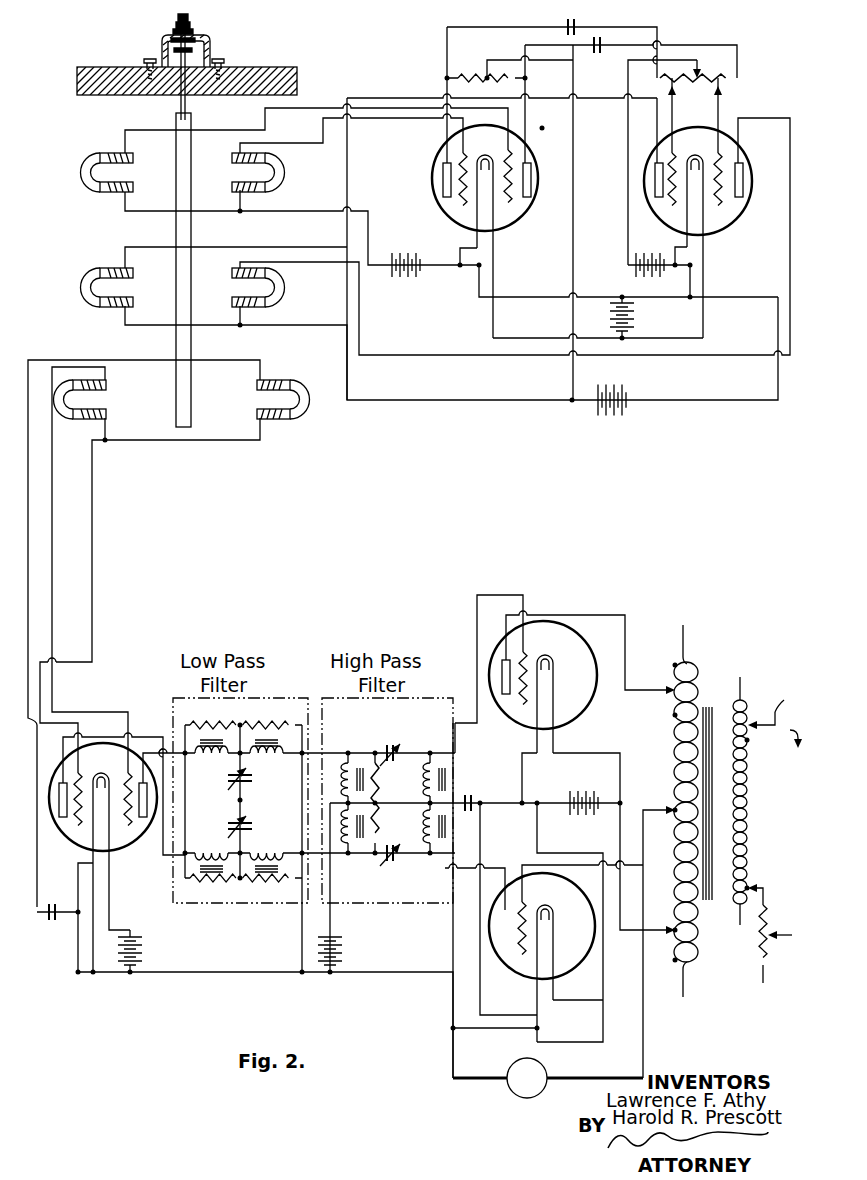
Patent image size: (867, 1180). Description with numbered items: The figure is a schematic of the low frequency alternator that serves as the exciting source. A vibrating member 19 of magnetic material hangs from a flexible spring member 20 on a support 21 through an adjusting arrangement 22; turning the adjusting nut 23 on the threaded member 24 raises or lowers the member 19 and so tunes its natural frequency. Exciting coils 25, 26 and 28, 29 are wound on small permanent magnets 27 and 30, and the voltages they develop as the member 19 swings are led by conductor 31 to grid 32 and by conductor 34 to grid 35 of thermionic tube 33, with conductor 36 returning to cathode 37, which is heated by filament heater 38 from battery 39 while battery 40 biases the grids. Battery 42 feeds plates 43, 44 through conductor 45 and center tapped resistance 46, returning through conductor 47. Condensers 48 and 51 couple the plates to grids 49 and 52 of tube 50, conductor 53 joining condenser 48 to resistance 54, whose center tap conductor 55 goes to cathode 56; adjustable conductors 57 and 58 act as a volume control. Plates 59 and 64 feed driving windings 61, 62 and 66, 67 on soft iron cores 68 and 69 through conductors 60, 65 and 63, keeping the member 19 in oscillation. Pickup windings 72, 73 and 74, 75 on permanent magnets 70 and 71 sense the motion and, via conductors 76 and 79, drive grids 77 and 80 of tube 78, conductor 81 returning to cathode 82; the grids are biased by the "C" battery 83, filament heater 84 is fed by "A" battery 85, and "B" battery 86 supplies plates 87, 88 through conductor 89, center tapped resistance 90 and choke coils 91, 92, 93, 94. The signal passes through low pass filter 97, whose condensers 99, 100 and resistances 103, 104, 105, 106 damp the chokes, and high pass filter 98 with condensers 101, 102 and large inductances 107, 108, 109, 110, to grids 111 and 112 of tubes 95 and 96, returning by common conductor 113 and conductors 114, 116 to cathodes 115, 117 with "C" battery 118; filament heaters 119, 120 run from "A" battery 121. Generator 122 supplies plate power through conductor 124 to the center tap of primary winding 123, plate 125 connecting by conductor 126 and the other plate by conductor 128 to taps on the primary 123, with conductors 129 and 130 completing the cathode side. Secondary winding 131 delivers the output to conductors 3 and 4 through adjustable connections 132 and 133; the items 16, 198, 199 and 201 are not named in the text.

The conductor 3 is at (794, 747).
The conductor 4 is at (766, 972).
The terminal 16 is at (787, 693).
The vibrating member 19 is at (192, 232).
The flexible spring member 20 is at (180, 108).
The support 21 is at (264, 67).
The adjusting arrangement 22 is at (210, 50).
The adjusting nut 23 is at (195, 25).
The threaded member 24 is at (176, 18).
The exciting coil 25 is at (102, 150).
The exciting coil 26 is at (117, 205).
The small permanent magnet 27 is at (82, 176).
The exciting coil 28 is at (262, 153).
The exciting coil 29 is at (250, 200).
The small permanent magnet 30 is at (284, 174).
The conductor 31 is at (315, 108).
The grid 32 is at (512, 208).
The thermionic tube 33 is at (543, 155).
The conductor 34 is at (390, 118).
The grid 35 is at (458, 208).
The conductor 36 is at (330, 238).
The cathode 37 is at (470, 230).
The filament heater 38 is at (497, 228).
The battery 39 is at (636, 320).
The battery 40 is at (405, 282).
The battery 42 is at (628, 420).
The plate 43 is at (442, 185).
The plate 44 is at (531, 183).
The conductor 45 is at (580, 240).
The center tapped resistance 46 is at (478, 66).
The conductor 47 is at (742, 300).
The condenser 48 is at (582, 25).
The grid 49 is at (676, 157).
The thermionic tube 50 is at (722, 213).
The condenser 51 is at (600, 52).
The grid 52 is at (720, 220).
The conductor 53 is at (660, 33).
The resistance 54 is at (700, 70).
The conductor 55 is at (626, 90).
The cathode 56 is at (674, 242).
The conductor 57 is at (676, 120).
The conductor 58 is at (724, 112).
The plate 59 is at (657, 198).
The conductor 60 is at (278, 247).
The driving winding 61 is at (115, 264).
The driving winding 62 is at (117, 310).
The conductor 63 is at (318, 330).
The plate 64 is at (743, 180).
The conductor 65 is at (788, 262).
The driving winding 66 is at (230, 275).
The driving winding 67 is at (248, 312).
The soft iron electromagnet core 68 is at (82, 292).
The soft iron electromagnet core 69 is at (284, 289).
The small permanent magnet 70 is at (75, 420).
The small permanent magnet 71 is at (308, 400).
The pickup winding 72 is at (103, 390).
The pickup winding 73 is at (105, 408).
The pickup winding 74 is at (268, 378).
The pickup winding 75 is at (270, 423).
The conductor 76 is at (54, 527).
The grid 77 is at (130, 832).
The thermionic tube 78 is at (78, 880).
The conductor 79 is at (28, 575).
The grid 80 is at (74, 830).
The conductor 81 is at (94, 555).
The cathode 82 is at (100, 770).
The "C" battery 83 is at (47, 920).
The filament heater 84 is at (108, 845).
The "A" battery 85 is at (143, 950).
The "B" battery 86 is at (343, 950).
The plate 87 is at (58, 800).
The plate 88 is at (146, 815).
The conductor 89 is at (350, 895).
The center tapped resistance 90 is at (380, 800).
The choke coil 91 is at (270, 762).
The choke coil 92 is at (212, 762).
The choke coil 93 is at (276, 839).
The choke coil 94 is at (212, 845).
The thermionic tube 95 is at (586, 710).
The thermionic tube 96 is at (568, 970).
The low pass filter 97 is at (270, 690).
The high pass filter 98 is at (390, 690).
The condenser 99 is at (252, 786).
The condenser 100 is at (252, 822).
The condenser 101 is at (392, 735).
The condenser 102 is at (398, 870).
The resistance 103 is at (268, 723).
The resistance 104 is at (212, 723).
The resistance 105 is at (262, 880).
The resistance 106 is at (205, 880).
The choke coil reactance 107 is at (345, 760).
The choke coil reactance 108 is at (350, 845).
The choke coil reactance 109 is at (434, 760).
The choke coil reactance 110 is at (434, 845).
The grid 111 is at (526, 655).
The grid 112 is at (520, 958).
The common conductor 113 is at (500, 806).
The conductor 114 is at (515, 780).
The cathode 115 is at (527, 742).
The conductor 116 is at (480, 848).
The cathode 117 is at (482, 948).
The "C" battery 118 is at (466, 790).
The filament heater 119 is at (554, 690).
The filament heater 120 is at (554, 935).
The "A" battery 121 is at (580, 790).
The generator 122 is at (548, 1068).
The primary winding 123 is at (708, 936).
The conductor 124 is at (645, 1020).
The plate 125 is at (505, 694).
The conductor 126 is at (598, 612).
The conductor 128 is at (572, 864).
The conductor 129 is at (490, 1030).
The conductor 130 is at (603, 1038).
The secondary winding 131 is at (748, 795).
The adjustable connection 132 is at (754, 720).
The adjustable connection 133 is at (750, 872).
The resistor 198 is at (758, 960).
The resistor 199 is at (790, 928).
The terminal 201 is at (765, 895).